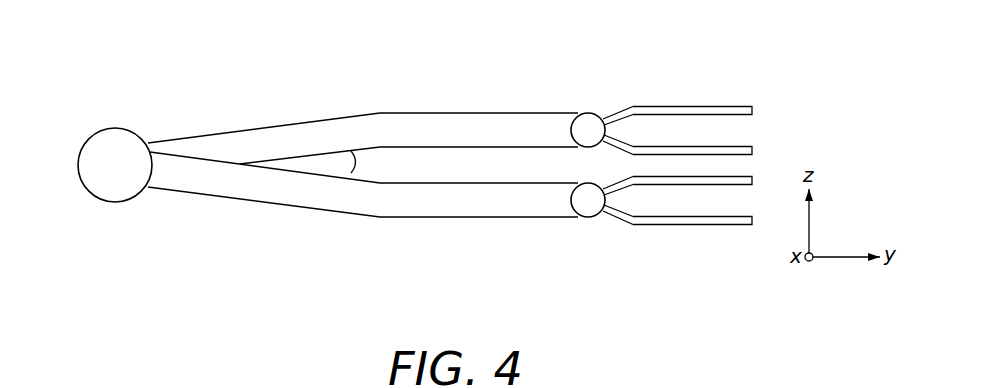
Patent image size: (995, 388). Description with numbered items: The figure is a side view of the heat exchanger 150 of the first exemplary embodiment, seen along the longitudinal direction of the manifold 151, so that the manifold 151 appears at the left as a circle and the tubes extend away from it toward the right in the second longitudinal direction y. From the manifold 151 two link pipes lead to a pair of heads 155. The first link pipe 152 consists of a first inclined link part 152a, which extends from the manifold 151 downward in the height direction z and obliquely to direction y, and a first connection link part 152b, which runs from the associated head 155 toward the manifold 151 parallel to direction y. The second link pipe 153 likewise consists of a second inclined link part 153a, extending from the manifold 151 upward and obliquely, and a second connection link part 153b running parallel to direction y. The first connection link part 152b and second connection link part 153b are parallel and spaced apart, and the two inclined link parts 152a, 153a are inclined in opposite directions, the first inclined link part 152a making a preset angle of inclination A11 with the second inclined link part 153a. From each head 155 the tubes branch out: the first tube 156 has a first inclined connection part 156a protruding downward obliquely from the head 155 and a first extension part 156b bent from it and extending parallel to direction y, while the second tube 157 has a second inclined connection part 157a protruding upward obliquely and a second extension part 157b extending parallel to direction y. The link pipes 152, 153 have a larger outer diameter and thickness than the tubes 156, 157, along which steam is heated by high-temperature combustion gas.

The heat exchanger 150 is at (431, 155).
The manifold 151 is at (120, 150).
The first link pipe 152 is at (363, 244).
The first inclined link part 152a is at (280, 190).
The first connection link part 152b is at (475, 195).
The second link pipe 153 is at (363, 104).
The second inclined link part 153a is at (280, 140).
The second connection link part 153b is at (475, 137).
The head 155 is at (587, 127).
The first tube 156 is at (693, 242).
The first inclined connection part 156a is at (615, 217).
The first extension part 156b is at (697, 222).
The second tube 157 is at (694, 88).
The second inclined connection part 157a is at (615, 117).
The second extension part 157b is at (697, 108).
The angle of inclination A11 is at (372, 164).